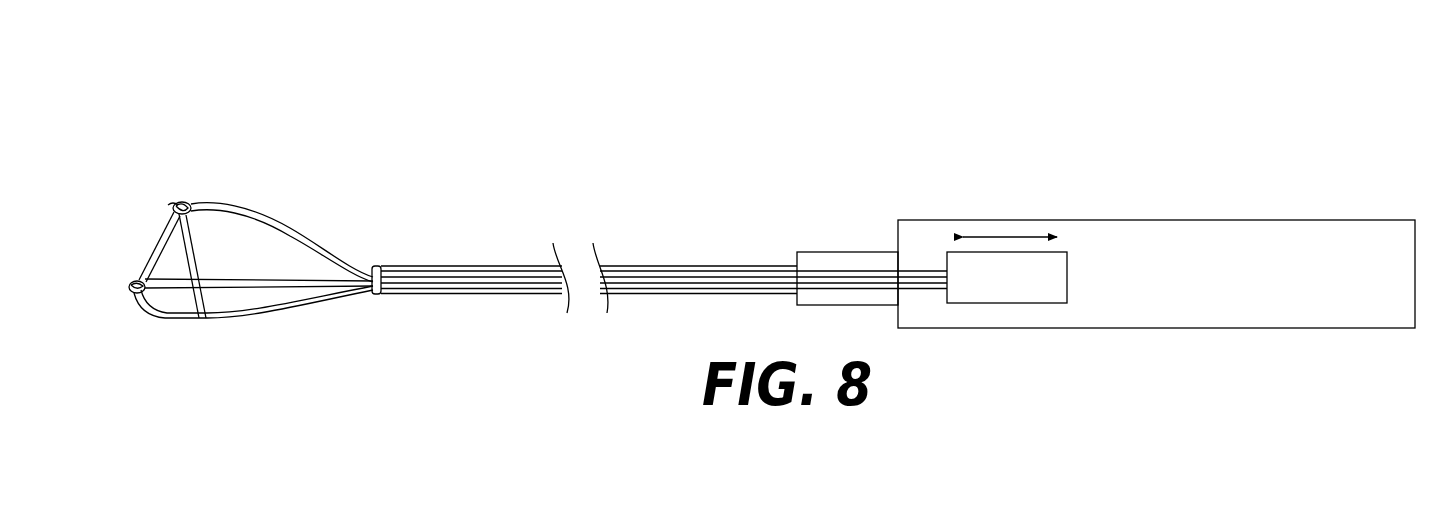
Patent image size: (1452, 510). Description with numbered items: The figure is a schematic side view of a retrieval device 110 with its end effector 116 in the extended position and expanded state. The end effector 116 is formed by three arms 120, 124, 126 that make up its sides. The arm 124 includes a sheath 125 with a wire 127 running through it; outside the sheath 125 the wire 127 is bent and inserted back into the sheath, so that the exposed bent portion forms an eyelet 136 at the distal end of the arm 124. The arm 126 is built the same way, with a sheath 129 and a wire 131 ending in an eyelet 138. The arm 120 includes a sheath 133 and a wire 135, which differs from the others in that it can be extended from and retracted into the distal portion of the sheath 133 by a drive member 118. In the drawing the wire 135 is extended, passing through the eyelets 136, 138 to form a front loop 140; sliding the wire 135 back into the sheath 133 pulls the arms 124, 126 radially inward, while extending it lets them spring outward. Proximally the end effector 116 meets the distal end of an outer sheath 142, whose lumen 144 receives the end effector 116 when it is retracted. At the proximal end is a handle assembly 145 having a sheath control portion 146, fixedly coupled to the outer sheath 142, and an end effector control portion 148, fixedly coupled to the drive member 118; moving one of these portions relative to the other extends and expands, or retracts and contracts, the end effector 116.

The retrieval device 110 is at (717, 178).
The end effector 116 is at (128, 260).
The drive member 118 is at (442, 276).
The arm 120 is at (223, 328).
The arm 124 is at (193, 197).
The sheath 125 is at (273, 218).
The arm 126 is at (157, 305).
The wire 127 is at (170, 205).
The sheath 129 is at (161, 273).
The wire 131 is at (130, 283).
The sheath 133 is at (297, 312).
The wire 135 is at (178, 322).
The eyelet 136 is at (173, 194).
The eyelet 138 is at (122, 298).
The front loop 140 is at (165, 322).
The outer sheath 142 is at (380, 266).
The lumen 144 is at (643, 291).
The handle assembly 145 is at (1273, 198).
The sheath control portion 146 is at (1128, 220).
The end effector control portion 148 is at (1068, 268).